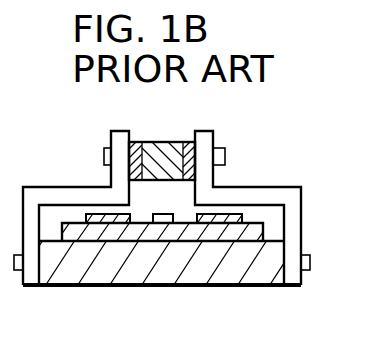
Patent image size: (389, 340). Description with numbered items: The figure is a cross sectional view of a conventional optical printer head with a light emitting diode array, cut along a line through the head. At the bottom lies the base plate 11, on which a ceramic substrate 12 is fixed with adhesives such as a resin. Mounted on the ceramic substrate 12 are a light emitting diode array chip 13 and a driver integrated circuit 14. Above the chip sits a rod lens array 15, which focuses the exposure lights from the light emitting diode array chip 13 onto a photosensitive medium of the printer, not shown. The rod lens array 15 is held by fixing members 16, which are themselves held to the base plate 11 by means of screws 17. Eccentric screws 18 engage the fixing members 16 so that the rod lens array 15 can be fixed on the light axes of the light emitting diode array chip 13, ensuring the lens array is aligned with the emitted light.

The base plate 11 is at (77, 273).
The ceramic substrate 12 is at (125, 237).
The light emitting diode array chip 13 is at (168, 220).
The driver integrated circuit 14 is at (232, 218).
The rod lens array 15 is at (170, 142).
The fixing member 16 is at (302, 190).
The screw 17 is at (311, 262).
The eccentric screw 18 is at (226, 154).